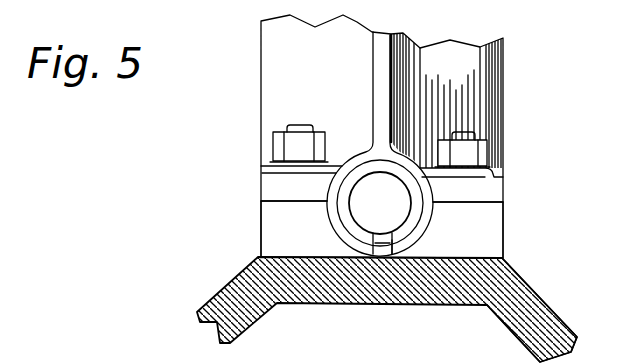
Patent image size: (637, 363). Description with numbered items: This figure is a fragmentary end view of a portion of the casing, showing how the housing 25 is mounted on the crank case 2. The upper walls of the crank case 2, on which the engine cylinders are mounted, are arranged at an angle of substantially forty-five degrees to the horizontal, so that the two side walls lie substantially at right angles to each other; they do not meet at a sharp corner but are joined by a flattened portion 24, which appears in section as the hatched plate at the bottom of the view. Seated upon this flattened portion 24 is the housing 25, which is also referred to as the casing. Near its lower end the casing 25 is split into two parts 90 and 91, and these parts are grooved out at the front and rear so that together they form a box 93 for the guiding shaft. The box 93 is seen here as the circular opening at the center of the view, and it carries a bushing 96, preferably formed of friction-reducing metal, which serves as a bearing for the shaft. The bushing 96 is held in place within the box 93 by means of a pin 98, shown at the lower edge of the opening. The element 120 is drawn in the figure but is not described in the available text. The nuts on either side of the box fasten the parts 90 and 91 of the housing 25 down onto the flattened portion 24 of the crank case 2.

The crank case 2 is at (533, 327).
The flattened portion 24 is at (347, 268).
The housing 25 is at (470, 92).
The part of the casing 90 is at (415, 136).
The part of the casing 91 is at (480, 216).
The box 93 is at (334, 205).
The bushing 96 is at (392, 240).
The pin 98 is at (376, 249).
The pipe 120 is at (382, 74).